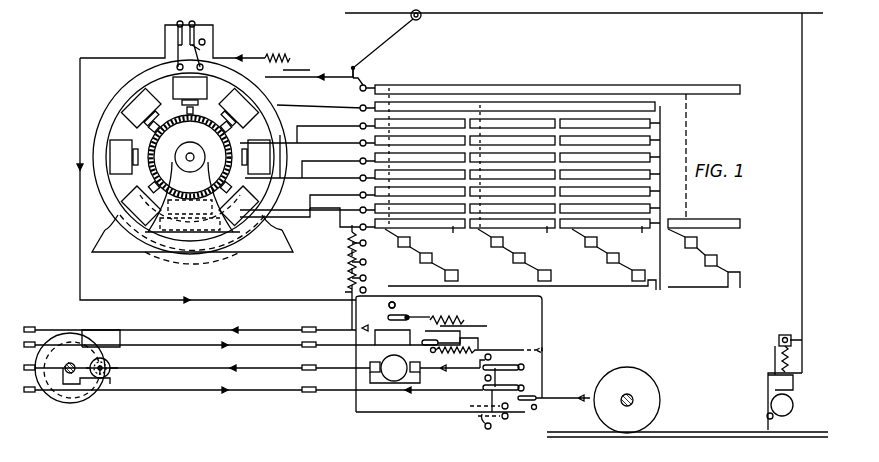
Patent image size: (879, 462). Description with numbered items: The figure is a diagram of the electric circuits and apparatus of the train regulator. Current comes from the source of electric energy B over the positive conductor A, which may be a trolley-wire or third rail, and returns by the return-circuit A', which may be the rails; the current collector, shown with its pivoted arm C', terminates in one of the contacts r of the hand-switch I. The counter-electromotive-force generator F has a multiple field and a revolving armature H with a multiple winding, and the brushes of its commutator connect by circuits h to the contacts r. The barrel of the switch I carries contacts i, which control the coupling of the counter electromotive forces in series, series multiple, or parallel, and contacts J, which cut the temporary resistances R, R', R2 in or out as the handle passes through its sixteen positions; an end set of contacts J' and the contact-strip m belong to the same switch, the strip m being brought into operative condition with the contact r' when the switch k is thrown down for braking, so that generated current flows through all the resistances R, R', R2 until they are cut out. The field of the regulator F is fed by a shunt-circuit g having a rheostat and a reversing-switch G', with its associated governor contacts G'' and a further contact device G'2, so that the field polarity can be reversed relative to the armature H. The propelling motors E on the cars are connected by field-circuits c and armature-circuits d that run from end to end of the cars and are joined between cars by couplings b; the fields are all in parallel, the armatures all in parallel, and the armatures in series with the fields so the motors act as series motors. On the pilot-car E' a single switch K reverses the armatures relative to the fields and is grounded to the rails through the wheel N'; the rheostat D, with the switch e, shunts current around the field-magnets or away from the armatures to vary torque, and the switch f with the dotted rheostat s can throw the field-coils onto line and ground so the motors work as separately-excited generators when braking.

The positive conductor A is at (584, 190).
The return-circuit A' is at (687, 426).
The source of electric energy B is at (771, 382).
The pivoted contact arm C' is at (387, 44).
The rheostat D is at (448, 322).
The electric motor E is at (77, 382).
The pilot car E' is at (449, 364).
The counter-electromotive-force generator F is at (192, 168).
The reversing-switch G' is at (300, 56).
The governor contacts G'' is at (172, 45).
The contact device G'2 is at (494, 427).
The armature H is at (190, 153).
The hand-switch I is at (554, 165).
The contacts J is at (515, 255).
The end stepped contacts J' is at (698, 250).
The switch K is at (502, 383).
The wheel N' is at (627, 400).
The temporary resistance R is at (341, 257).
The temporary resistance R' is at (336, 256).
The temporary resistance R2 is at (335, 272).
The couplings b is at (170, 370).
The field-circuits c is at (195, 332).
The armature-circuits d is at (195, 379).
The switch e is at (409, 309).
The switch f is at (449, 348).
The shunt-circuit g is at (207, 175).
The circuits h is at (301, 166).
The contacts i is at (556, 171).
The switch k is at (554, 396).
The contact-strip m is at (564, 290).
The contacts r is at (364, 176).
The contact r' is at (359, 307).
The rheostat s is at (489, 356).